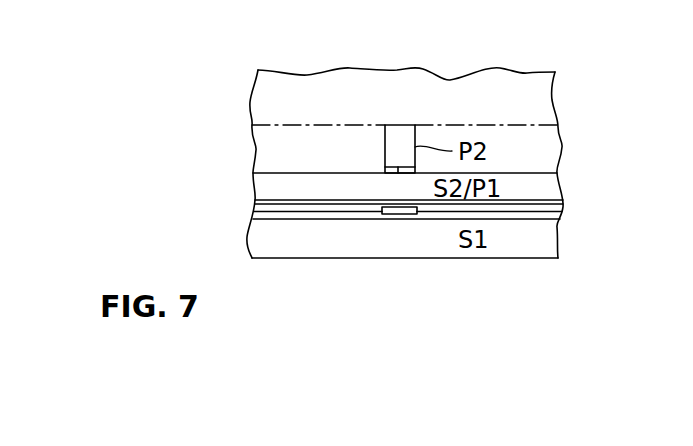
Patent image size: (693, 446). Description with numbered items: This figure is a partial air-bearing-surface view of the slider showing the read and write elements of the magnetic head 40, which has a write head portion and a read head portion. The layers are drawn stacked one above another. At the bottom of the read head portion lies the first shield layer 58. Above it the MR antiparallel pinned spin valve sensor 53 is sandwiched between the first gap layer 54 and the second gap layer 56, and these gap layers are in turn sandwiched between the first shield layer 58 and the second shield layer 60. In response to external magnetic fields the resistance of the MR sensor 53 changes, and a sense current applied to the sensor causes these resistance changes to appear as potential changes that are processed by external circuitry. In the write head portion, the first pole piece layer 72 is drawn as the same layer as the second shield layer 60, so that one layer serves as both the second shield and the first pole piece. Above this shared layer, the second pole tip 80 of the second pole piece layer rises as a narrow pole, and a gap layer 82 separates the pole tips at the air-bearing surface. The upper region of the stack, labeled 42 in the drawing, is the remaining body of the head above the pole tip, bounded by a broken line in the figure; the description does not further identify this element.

The magnetic head 40 is at (574, 86).
The substrate / upper layer 42 is at (263, 97).
The second pole tip 80 is at (405, 132).
The gap layer 82 is at (398, 168).
The second shield layer 60 is at (341, 188).
The first pole piece layer 72 is at (257, 193).
The second gap layer 56 is at (518, 206).
The MR antiparallel pinned spin valve sensor 53 is at (402, 216).
The first gap layer 54 is at (312, 220).
The first shield layer 58 is at (548, 240).